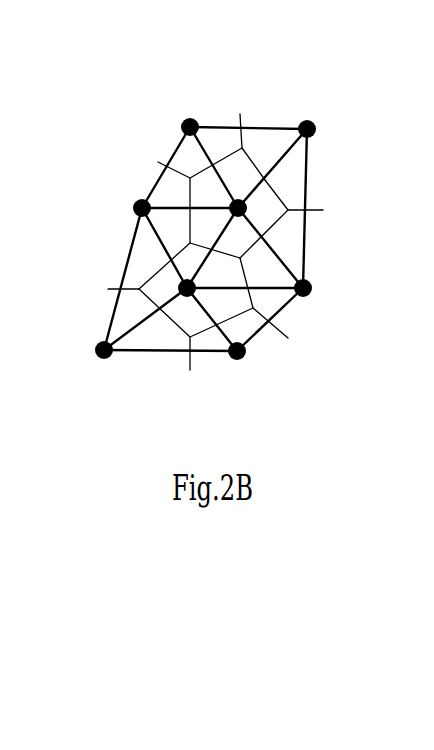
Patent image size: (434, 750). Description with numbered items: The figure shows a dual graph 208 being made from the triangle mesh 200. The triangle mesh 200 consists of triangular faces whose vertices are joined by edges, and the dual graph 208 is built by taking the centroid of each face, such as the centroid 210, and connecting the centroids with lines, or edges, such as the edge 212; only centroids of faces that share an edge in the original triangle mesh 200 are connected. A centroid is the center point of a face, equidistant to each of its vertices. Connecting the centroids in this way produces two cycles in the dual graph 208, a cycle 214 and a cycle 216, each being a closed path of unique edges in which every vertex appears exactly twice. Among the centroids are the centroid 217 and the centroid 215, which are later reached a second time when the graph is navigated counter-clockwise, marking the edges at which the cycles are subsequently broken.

The triangle mesh 200 is at (112, 28).
The dual graph 208 is at (148, 343).
The centroid 210 is at (242, 140).
The edge 212 is at (278, 193).
The cycle 214 is at (207, 178).
The centroid 215 is at (178, 280).
The cycle 216 is at (240, 310).
The centroid 217 is at (294, 214).